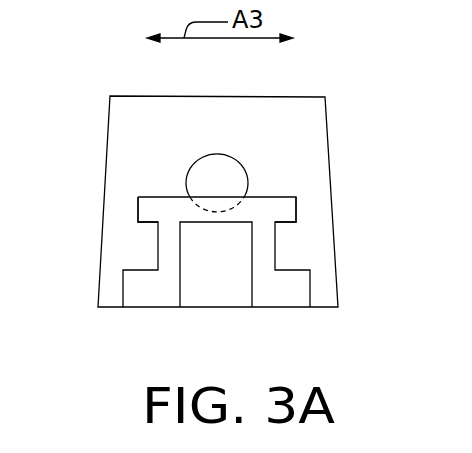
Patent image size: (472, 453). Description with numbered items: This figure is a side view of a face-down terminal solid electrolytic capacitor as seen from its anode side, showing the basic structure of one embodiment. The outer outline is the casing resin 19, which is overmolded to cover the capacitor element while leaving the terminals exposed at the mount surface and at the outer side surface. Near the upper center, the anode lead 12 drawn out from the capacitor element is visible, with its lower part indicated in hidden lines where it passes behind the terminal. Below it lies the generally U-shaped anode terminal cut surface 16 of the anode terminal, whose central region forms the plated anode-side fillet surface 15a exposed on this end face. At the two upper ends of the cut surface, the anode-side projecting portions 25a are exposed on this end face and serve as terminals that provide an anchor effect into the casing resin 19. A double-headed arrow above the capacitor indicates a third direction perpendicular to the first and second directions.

The anode lead 12 is at (217, 154).
The casing resin 19 is at (298, 133).
The anode-side projecting portions 25a is at (148, 208).
The anode-side fillet surface 15a is at (216, 280).
The anode terminal cut surface 16 is at (295, 313).